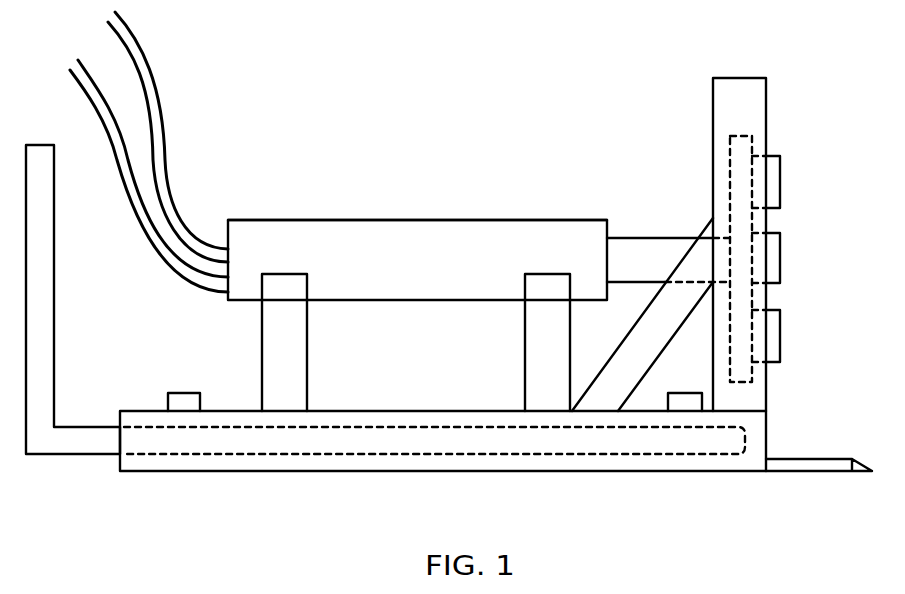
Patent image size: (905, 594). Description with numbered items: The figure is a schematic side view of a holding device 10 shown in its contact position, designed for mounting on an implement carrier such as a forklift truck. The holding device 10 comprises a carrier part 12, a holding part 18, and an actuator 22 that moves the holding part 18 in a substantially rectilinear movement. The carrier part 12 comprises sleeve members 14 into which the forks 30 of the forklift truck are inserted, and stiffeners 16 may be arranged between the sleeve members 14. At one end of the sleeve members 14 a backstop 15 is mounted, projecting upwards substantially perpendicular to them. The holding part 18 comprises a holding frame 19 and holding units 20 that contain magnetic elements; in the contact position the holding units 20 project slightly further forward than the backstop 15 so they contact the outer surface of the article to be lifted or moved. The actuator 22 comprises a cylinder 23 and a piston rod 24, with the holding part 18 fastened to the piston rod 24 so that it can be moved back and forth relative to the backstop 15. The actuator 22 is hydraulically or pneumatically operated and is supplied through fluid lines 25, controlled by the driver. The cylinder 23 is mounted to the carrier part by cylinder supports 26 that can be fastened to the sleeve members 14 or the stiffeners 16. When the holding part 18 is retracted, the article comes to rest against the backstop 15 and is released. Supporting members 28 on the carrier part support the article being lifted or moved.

The holding device 10 is at (553, 93).
The carrier part 12 is at (790, 411).
The sleeve members 14 is at (255, 473).
The backstop 15 is at (767, 100).
The stiffeners 16 is at (185, 392).
The holding part 18 is at (722, 158).
The holding frame 19 is at (738, 372).
The holding units 20 is at (782, 183).
The actuator 22 is at (456, 198).
The cylinder 23 is at (300, 218).
The piston rod 24 is at (629, 250).
The fluid lines 25 is at (133, 184).
The cylinder supports 26 is at (307, 365).
The supporting members 28 is at (818, 473).
The forks 30 is at (73, 456).